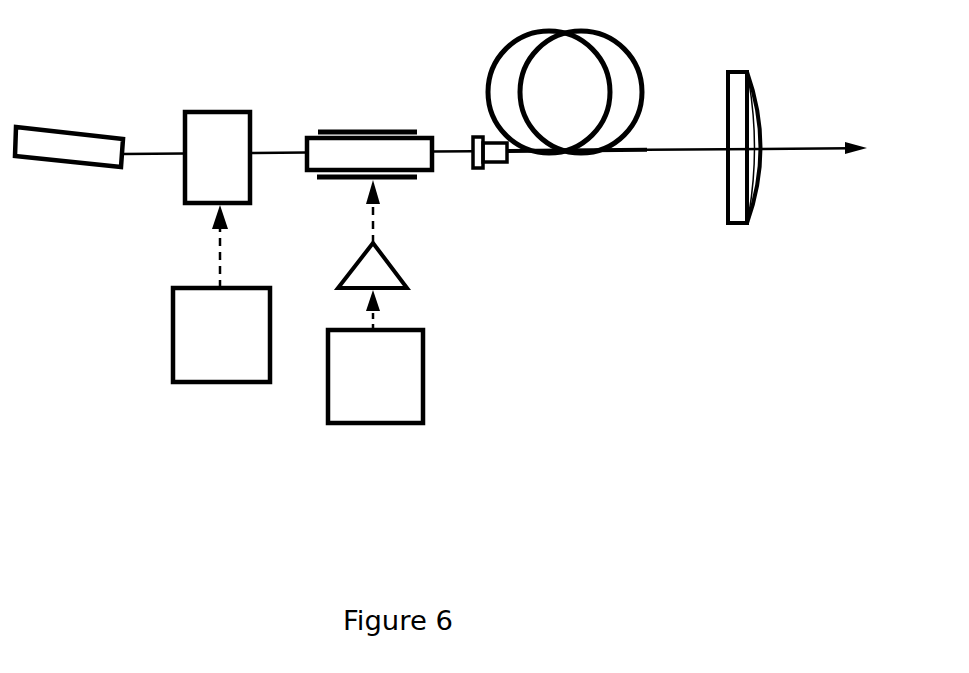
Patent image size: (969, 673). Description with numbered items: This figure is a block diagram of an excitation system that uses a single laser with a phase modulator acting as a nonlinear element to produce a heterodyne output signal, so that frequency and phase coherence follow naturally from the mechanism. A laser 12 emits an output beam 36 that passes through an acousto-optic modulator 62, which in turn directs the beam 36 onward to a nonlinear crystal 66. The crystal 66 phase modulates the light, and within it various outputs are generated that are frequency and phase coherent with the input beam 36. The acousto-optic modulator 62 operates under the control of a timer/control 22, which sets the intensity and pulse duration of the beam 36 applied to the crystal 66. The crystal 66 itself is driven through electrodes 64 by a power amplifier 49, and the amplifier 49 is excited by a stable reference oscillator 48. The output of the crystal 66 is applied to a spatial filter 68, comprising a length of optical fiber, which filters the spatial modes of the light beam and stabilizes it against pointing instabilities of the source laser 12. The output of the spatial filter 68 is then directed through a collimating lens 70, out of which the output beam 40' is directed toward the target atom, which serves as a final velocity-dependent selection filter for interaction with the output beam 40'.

The laser 12 is at (70, 132).
The output beam 36 is at (166, 156).
The acousto-optic modulator 62 is at (217, 112).
The timer/control 22 is at (173, 325).
The electrodes 64 is at (338, 179).
The nonlinear crystal 66 is at (312, 137).
The power amplifier 49 is at (383, 256).
The stable reference oscillator 48 is at (423, 375).
The spatial filter 68 is at (575, 152).
The output beam 40' is at (757, 130).
The collimating lens 70 is at (738, 223).